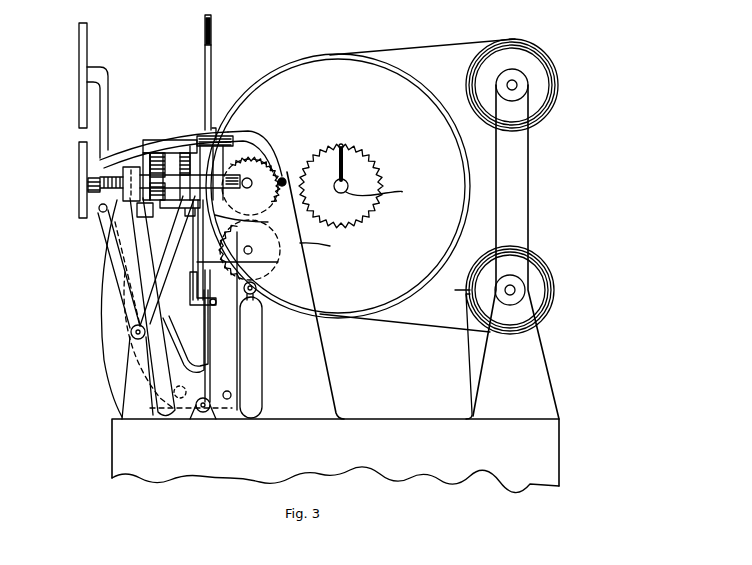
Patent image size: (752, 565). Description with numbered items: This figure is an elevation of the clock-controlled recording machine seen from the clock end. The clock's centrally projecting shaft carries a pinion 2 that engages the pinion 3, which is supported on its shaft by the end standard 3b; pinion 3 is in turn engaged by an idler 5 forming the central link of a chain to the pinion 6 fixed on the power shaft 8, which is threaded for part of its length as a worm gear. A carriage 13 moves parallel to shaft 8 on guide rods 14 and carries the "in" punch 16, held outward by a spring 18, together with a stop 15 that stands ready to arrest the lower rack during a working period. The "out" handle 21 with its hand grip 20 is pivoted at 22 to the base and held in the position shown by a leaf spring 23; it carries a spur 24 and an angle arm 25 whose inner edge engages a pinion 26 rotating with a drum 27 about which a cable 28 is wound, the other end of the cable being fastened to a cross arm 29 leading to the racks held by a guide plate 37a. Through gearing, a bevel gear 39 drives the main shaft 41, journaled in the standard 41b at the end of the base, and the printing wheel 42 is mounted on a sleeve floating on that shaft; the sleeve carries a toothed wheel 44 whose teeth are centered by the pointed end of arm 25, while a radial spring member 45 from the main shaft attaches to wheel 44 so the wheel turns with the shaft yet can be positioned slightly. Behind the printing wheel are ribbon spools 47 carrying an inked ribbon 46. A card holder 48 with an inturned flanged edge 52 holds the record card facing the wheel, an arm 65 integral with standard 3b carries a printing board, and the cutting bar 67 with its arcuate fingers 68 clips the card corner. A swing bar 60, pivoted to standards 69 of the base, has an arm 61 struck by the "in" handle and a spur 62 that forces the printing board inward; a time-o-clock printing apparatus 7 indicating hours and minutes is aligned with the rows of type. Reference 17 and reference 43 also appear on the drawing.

The pinion 2 is at (285, 178).
The pinion 3 is at (274, 154).
The end standard 3b is at (326, 246).
The idler 5 is at (249, 250).
The pinion 6 is at (258, 290).
The time-o-clock printing apparatus 7 is at (262, 143).
The power shaft 8 is at (251, 357).
The carriage 13 is at (126, 330).
The guide rods 14 is at (233, 386).
The stop 15 is at (141, 218).
The punch 16 is at (87, 190).
The bar 17 is at (78, 152).
The spring 18 is at (95, 176).
The hand grip 20 is at (79, 40).
The "out" handle 21 is at (106, 118).
The pivot 22 is at (203, 413).
The leaf spring 23 is at (190, 356).
The spur 24 is at (108, 225).
The angle arm 25 is at (140, 150).
The pinion 26 is at (190, 136).
The drum 27 is at (233, 192).
The cable 28 is at (257, 181).
The cross arm 29 is at (196, 262).
The guide plate 37a is at (163, 144).
The bevel gear 39 is at (336, 192).
The main shaft 41 is at (385, 193).
The standard 41b is at (388, 295).
The printing wheel 42 is at (338, 186).
The rim 43 is at (412, 78).
The toothed wheel 44 is at (327, 126).
The radial spring member 45 is at (344, 158).
The inked ribbon 46 is at (446, 42).
The ribbon spools 47 is at (540, 98).
The card holder 48 is at (214, 72).
The inturned flanged edge 52 is at (214, 30).
The swing bar 60 is at (130, 333).
The arm 61 is at (98, 212).
The spur 62 is at (254, 221).
The arm 65 is at (214, 132).
The cutting bar 67 is at (249, 262).
The arcuate finger 68 is at (190, 296).
The standards 69 is at (127, 384).